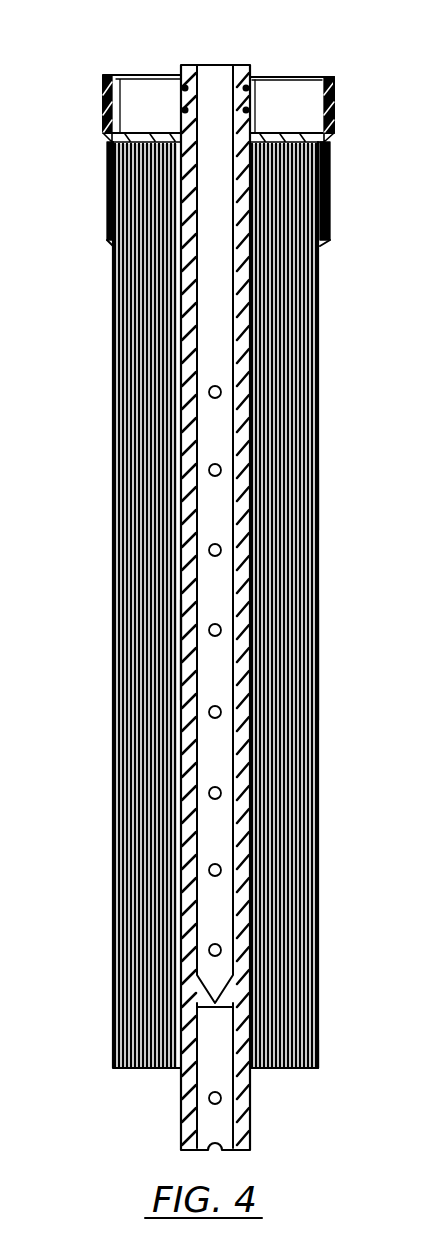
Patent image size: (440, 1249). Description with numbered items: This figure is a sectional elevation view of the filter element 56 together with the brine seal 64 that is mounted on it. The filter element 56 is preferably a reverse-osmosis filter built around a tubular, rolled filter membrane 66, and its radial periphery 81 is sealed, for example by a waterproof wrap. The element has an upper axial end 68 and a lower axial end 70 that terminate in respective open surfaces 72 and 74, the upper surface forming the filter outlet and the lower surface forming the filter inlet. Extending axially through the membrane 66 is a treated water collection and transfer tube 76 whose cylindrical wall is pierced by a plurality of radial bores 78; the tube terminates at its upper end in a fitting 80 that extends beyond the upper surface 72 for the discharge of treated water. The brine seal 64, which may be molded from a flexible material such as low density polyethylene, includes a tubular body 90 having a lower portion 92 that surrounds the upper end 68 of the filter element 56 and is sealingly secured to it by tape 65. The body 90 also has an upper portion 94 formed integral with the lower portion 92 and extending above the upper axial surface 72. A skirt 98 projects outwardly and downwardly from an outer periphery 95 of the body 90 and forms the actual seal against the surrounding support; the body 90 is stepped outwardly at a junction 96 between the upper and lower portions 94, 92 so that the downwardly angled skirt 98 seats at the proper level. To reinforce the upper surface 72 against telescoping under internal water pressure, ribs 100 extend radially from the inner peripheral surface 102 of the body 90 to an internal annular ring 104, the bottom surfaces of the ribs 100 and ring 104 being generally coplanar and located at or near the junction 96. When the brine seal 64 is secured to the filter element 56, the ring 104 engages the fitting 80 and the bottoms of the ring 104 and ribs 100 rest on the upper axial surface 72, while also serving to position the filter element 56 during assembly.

The filter element 56 is at (318, 500).
The brine seal 64 is at (97, 74).
The tape 65 is at (319, 330).
The filter membrane 66 is at (319, 400).
The upper axial end 68 is at (108, 152).
The lower axial end 70 is at (319, 1062).
The upper open surface 72 is at (165, 110).
The lower open surface 74 is at (300, 1070).
The treated water collection and transfer tube 76 is at (207, 630).
The radial bores 78 is at (190, 637).
The fitting 80 is at (203, 64).
The radial periphery 81 is at (319, 660).
The tubular body 90 is at (333, 83).
The lower portion 92 is at (326, 175).
The upper portion 94 is at (336, 84).
The outer periphery 95 is at (336, 125).
The junction 96 is at (326, 146).
The skirt 98 is at (98, 90).
The ribs 100 is at (126, 128).
The inner peripheral surface 102 is at (318, 79).
The internal annular ring 104 is at (258, 130).